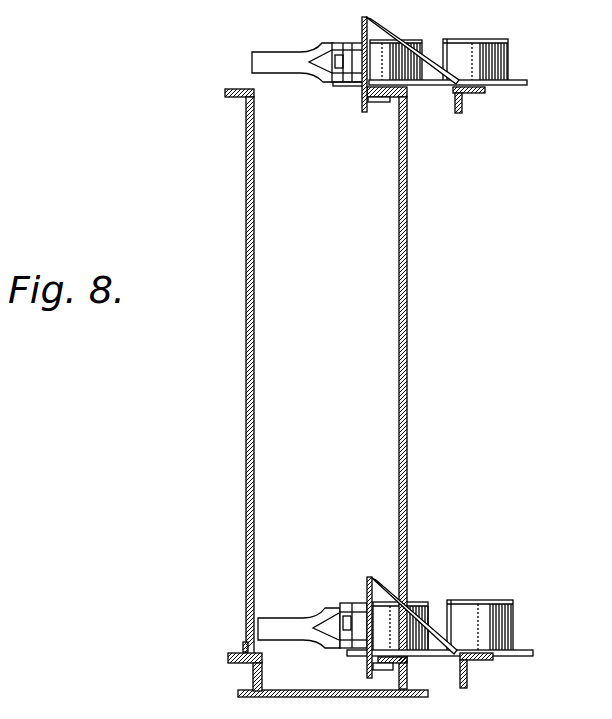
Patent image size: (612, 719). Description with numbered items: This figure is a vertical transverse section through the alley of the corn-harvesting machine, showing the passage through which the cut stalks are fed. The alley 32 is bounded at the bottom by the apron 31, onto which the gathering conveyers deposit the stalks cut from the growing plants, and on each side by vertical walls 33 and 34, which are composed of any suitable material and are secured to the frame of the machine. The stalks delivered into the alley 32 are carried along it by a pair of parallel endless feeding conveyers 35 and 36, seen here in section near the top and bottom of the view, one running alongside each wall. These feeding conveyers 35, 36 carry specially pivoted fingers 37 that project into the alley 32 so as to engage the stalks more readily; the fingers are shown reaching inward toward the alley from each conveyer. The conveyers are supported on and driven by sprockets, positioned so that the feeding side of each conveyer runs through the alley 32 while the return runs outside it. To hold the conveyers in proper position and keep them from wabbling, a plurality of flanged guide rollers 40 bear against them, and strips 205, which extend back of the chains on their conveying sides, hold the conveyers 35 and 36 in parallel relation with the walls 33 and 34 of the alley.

The apron 31 is at (339, 697).
The alley 32 is at (335, 434).
The vertical wall 33 is at (255, 342).
The vertical wall 34 is at (408, 328).
The feeding conveyer 35 is at (344, 42).
The feeding conveyer 36 is at (357, 606).
The pivoted finger 37 is at (283, 58).
The flanged guide roller 40 is at (420, 47).
The strip 205 is at (368, 19).